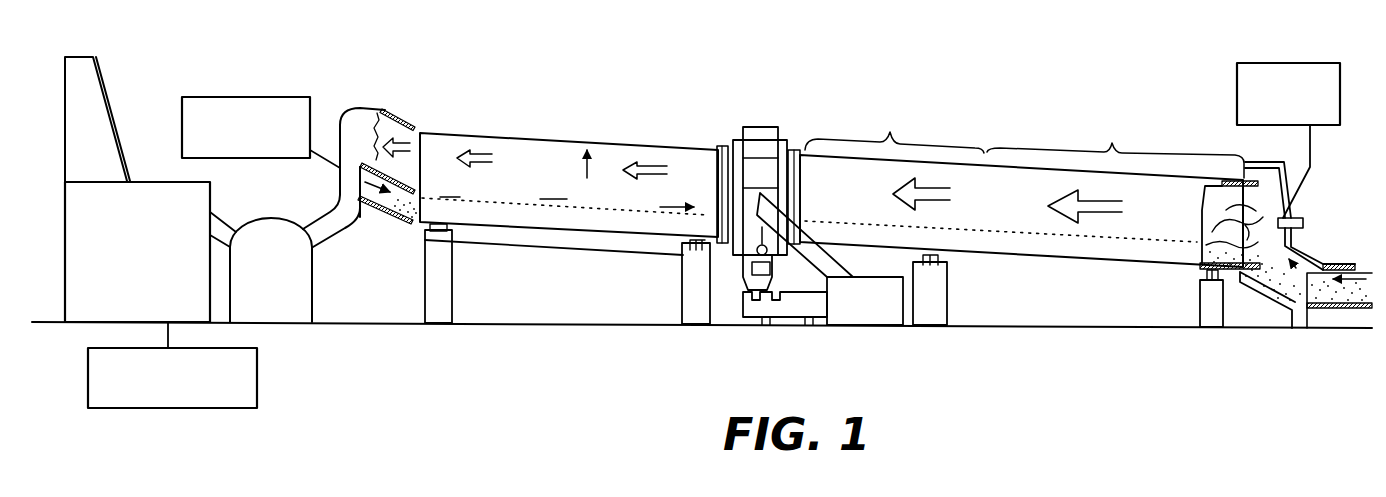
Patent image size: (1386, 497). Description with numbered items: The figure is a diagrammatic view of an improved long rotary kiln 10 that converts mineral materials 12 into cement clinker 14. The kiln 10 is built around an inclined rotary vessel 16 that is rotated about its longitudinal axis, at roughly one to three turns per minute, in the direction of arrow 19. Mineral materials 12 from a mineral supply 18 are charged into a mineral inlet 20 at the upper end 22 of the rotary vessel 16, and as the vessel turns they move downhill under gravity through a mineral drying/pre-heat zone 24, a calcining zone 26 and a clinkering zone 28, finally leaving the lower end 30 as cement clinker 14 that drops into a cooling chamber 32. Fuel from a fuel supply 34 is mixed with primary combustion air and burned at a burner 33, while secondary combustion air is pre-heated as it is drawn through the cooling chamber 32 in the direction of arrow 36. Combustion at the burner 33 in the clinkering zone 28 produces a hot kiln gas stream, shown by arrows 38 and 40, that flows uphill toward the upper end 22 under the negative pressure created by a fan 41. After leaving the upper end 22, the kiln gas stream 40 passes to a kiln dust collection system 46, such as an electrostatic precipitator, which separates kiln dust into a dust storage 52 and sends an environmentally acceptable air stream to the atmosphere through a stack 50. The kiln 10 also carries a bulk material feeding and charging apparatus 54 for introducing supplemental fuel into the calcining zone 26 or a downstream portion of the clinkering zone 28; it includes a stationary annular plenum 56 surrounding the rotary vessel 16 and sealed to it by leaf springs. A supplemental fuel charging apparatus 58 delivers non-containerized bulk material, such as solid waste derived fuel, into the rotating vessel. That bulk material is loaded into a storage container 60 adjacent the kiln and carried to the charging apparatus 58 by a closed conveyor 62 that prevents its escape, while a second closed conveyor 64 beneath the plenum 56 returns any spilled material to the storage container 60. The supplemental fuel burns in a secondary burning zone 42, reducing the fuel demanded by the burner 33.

The long rotary kiln 10 is at (1060, 85).
The mineral materials 12 is at (403, 217).
The cement clinker 14 is at (1330, 300).
The rotary vessel 16 is at (493, 133).
The mineral supply 18 is at (262, 97).
The arrow 19 is at (590, 168).
The mineral inlet 20 is at (375, 183).
The upper end 22 is at (424, 122).
The mineral drying/pre-heat zone 24 is at (573, 252).
The calcining zone 26 is at (894, 126).
The clinkering zone 28 is at (1115, 145).
The lower end 30 is at (1188, 277).
The cooling chamber 32 is at (1331, 250).
The burner 33 is at (1298, 223).
The fuel supply 34 is at (1300, 63).
The arrow 36 is at (1307, 305).
The arrows 38 is at (946, 186).
The kiln gas stream 40 is at (487, 163).
The fan 41 is at (313, 283).
The secondary burning zone 42 is at (370, 107).
The kiln dust collection system 46 is at (160, 182).
The stack 50 is at (107, 97).
The dust storage 52 is at (258, 375).
The bulk material feeding and charging apparatus 54 is at (730, 286).
The stationary plenum 56 is at (753, 120).
The supplemental fuel charging apparatus 58 is at (751, 220).
The storage container 60 is at (873, 315).
The closed conveyor 62 is at (803, 245).
The second closed conveyor 64 is at (788, 308).